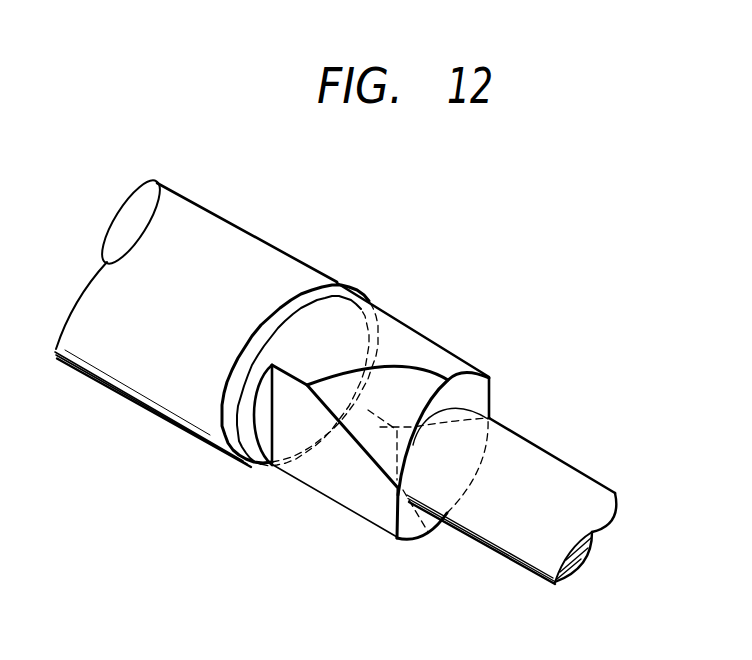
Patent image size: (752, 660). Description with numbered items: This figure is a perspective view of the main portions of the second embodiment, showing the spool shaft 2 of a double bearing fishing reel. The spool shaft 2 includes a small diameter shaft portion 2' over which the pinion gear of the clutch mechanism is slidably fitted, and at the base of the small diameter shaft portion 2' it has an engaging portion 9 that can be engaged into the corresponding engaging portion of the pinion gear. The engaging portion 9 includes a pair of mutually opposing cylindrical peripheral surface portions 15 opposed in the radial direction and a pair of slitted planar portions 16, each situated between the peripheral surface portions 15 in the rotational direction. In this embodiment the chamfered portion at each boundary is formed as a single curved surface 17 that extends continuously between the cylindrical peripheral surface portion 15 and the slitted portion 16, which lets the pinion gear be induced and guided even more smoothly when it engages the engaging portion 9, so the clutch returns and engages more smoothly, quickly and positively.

The spool shaft 2 is at (216, 317).
The small diameter shaft portion 2' is at (511, 466).
The cylindrical peripheral surface portion 15 is at (453, 368).
The slitted planar portion 16 is at (353, 490).
The chamfered portion 17 is at (407, 387).
The engaging portion 9 is at (412, 530).